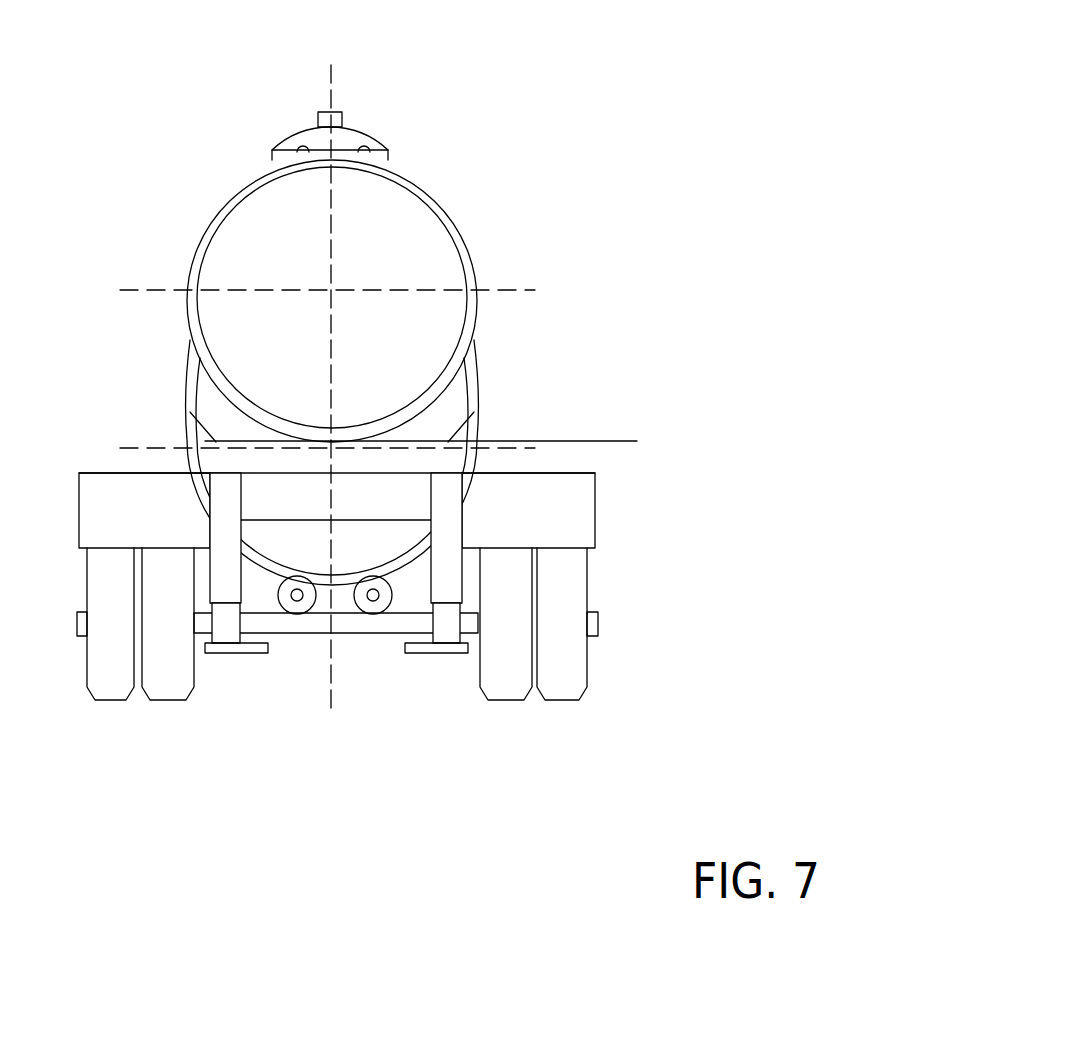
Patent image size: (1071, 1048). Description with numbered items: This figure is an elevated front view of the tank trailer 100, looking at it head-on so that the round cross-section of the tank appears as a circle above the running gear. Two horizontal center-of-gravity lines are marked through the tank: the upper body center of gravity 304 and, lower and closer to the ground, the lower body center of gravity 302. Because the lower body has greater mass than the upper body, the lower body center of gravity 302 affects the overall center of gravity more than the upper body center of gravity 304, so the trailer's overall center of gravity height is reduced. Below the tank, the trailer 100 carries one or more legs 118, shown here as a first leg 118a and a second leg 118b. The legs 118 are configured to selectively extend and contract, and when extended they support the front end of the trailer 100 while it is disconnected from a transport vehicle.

The tank trailer 100 is at (606, 110).
The lower body center of gravity 302 is at (505, 448).
The upper body center of gravity 304 is at (505, 290).
The legs 118 is at (348, 645).
The first leg 118a is at (237, 653).
The second leg 118b is at (435, 653).